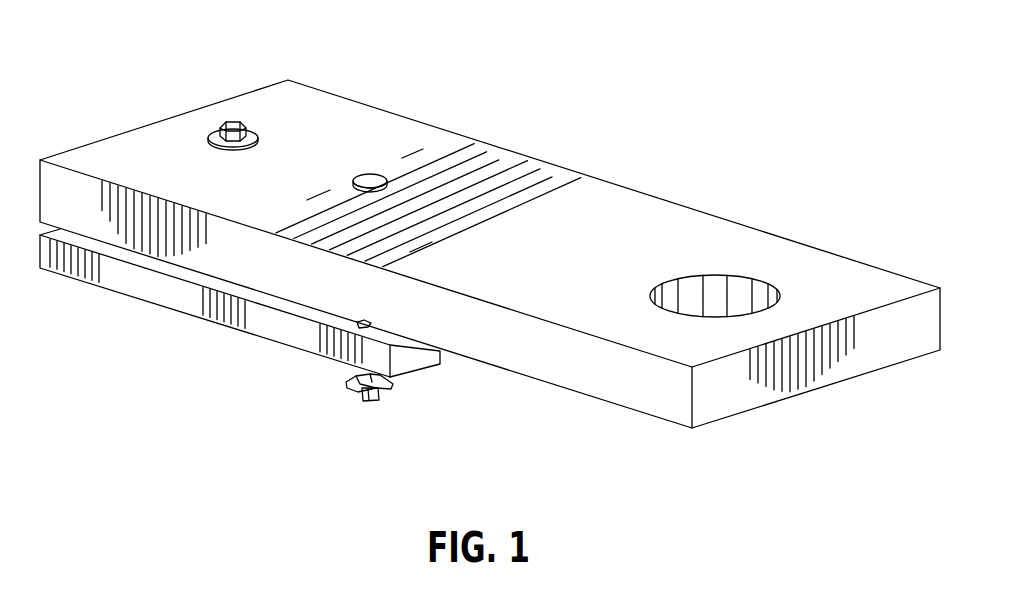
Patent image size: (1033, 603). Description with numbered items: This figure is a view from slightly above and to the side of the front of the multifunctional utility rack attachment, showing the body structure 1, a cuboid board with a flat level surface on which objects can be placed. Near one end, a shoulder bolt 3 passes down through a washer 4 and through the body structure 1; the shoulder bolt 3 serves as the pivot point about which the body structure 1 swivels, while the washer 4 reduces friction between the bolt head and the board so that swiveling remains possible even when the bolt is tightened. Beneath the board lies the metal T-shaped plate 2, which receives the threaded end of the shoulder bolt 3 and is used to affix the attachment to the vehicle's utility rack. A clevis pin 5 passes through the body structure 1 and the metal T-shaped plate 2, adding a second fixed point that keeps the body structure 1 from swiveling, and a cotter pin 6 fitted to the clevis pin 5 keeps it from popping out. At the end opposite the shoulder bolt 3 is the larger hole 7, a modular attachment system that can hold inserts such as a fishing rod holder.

The body structure 1 is at (621, 218).
The metal T-shaped plate 2 is at (283, 330).
The shoulder bolt 3 is at (237, 122).
The washer 4 is at (256, 133).
The clevis pin 5 is at (372, 403).
The cotter pin 6 is at (394, 387).
The hole 7 is at (717, 291).